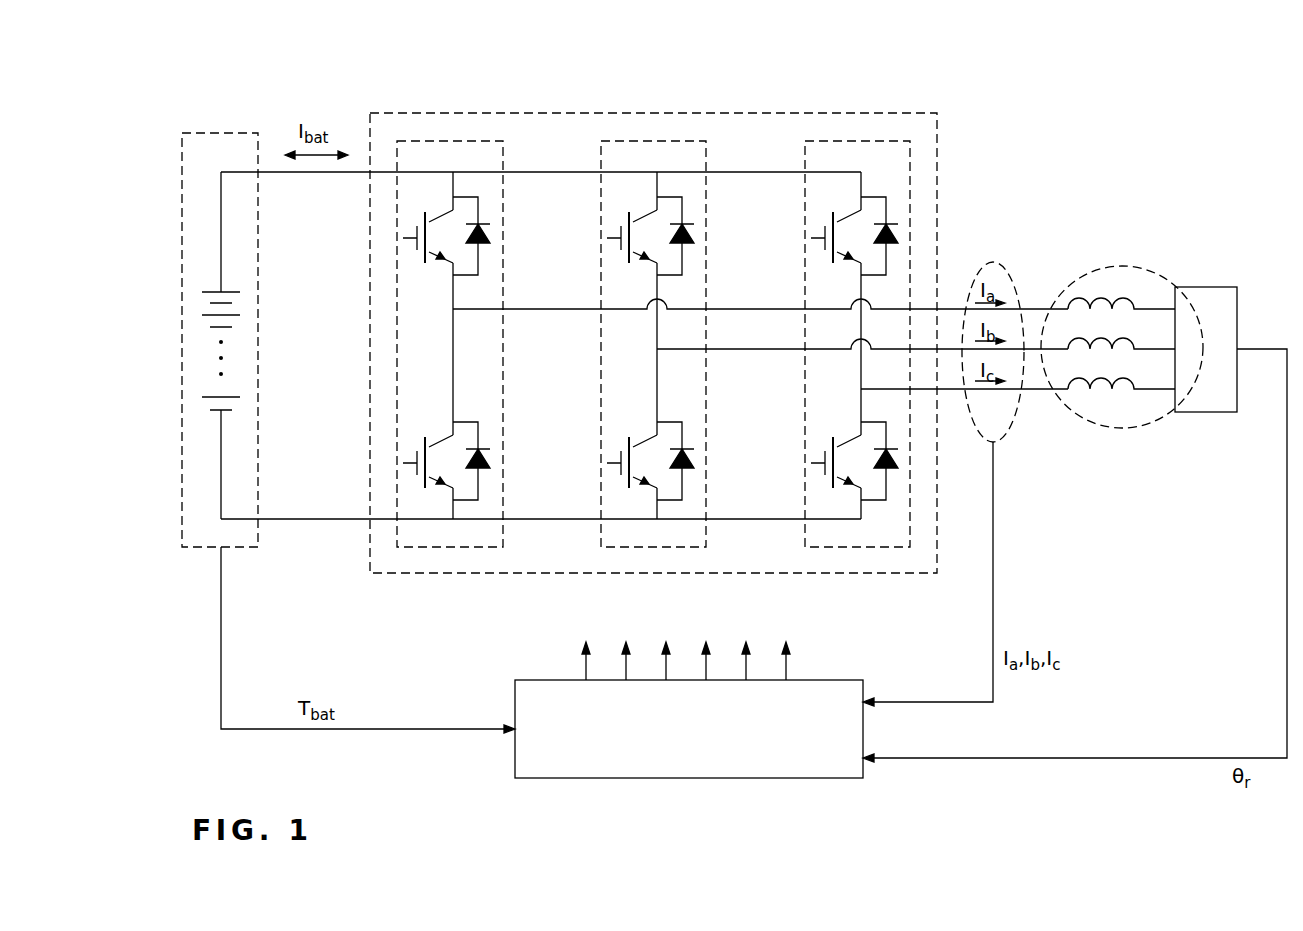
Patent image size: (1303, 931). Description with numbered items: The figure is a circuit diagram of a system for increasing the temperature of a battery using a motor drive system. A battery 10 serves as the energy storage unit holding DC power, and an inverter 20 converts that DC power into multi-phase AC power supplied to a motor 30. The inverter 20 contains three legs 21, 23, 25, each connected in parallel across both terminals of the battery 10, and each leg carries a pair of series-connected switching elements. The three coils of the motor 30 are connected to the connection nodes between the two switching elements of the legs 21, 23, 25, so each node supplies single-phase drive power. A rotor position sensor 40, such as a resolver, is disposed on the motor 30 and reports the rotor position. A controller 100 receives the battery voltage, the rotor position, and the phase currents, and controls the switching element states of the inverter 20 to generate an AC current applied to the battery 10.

The battery 10 is at (221, 133).
The inverter 20 is at (740, 113).
The first leg 21 is at (449, 141).
The second leg 23 is at (653, 141).
The third leg 25 is at (857, 141).
The motor 30 is at (1120, 266).
The rotor position sensor 40 is at (1202, 287).
The controller 100 is at (690, 778).